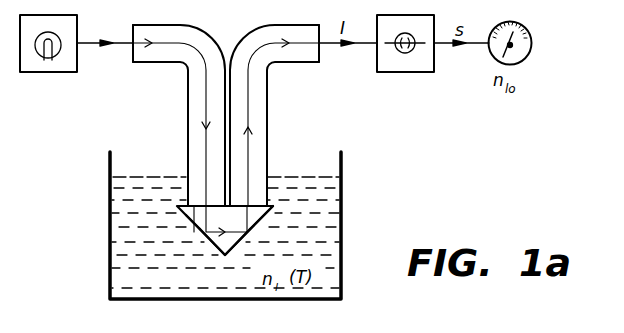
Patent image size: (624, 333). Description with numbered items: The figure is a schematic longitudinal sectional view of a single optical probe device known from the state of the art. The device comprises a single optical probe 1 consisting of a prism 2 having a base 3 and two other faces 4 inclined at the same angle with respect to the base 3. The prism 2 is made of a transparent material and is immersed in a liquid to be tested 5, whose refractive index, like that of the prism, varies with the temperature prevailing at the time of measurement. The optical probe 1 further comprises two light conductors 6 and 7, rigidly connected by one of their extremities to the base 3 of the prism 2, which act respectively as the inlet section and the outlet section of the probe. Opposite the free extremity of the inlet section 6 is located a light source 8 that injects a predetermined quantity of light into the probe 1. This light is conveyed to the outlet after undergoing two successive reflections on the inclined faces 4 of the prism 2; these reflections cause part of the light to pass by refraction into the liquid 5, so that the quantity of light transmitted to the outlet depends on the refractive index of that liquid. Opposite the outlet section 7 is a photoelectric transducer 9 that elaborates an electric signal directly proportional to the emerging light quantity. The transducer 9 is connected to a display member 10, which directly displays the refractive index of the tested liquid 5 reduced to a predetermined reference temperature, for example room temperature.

The single optical probe 1 is at (352, 200).
The prism 2 is at (232, 244).
The base 3 is at (192, 229).
The inclined faces 4 is at (215, 252).
The liquid to be tested 5 is at (304, 178).
The light conductor (inlet section) 6 is at (193, 121).
The light conductor (outlet section) 7 is at (260, 112).
The light source 8 is at (48, 68).
The photoelectric transducer 9 is at (412, 66).
The display member 10 is at (522, 50).